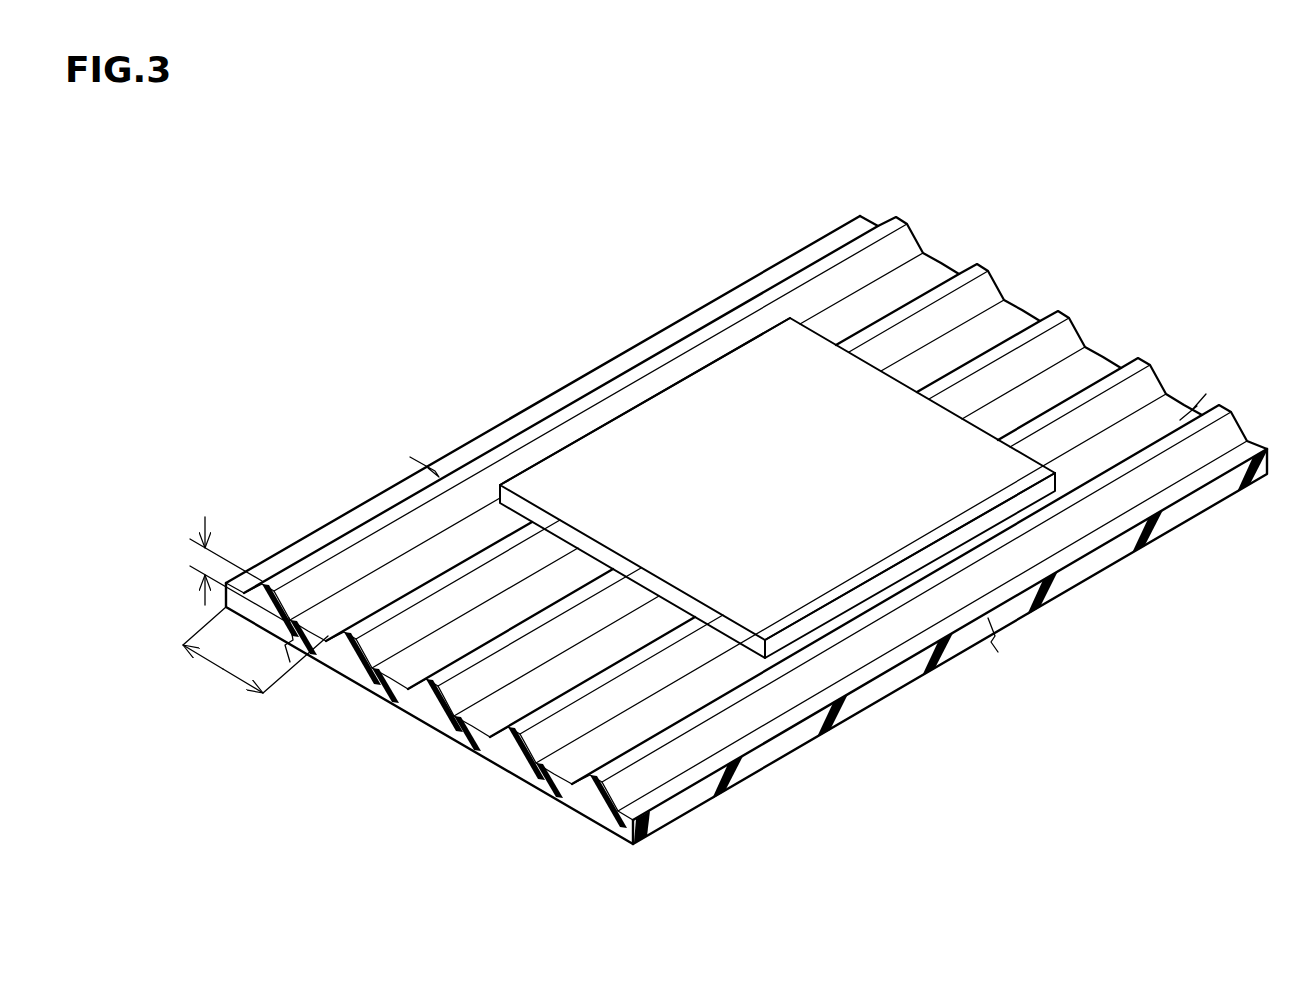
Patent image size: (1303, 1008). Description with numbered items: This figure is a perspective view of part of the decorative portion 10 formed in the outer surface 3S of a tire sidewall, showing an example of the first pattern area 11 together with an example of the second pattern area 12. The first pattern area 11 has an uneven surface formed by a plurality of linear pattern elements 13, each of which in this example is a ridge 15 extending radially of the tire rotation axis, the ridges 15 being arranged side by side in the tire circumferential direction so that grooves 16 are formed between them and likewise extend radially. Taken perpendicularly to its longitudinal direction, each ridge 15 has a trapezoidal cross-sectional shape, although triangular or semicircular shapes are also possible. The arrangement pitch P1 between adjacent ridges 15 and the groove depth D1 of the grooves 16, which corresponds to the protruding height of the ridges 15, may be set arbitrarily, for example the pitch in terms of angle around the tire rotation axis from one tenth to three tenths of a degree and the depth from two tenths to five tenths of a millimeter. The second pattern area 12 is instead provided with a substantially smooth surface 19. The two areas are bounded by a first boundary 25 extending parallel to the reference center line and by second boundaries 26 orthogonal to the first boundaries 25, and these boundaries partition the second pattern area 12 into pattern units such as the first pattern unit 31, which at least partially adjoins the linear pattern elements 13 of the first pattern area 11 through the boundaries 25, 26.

The decorative portion 10 is at (762, 217).
The first pattern area 11 is at (1072, 382).
The second pattern area 12 is at (668, 420).
The linear pattern element 13 is at (303, 727).
The ridge 15 is at (876, 233).
The groove 16 is at (920, 277).
The substantially smooth surface 19 is at (607, 452).
The first boundary 25 is at (556, 452).
The second boundary 26 is at (821, 335).
The first pattern unit 31 is at (812, 563).
The outer surface 3S is at (733, 385).
The groove depth D1 is at (226, 570).
The arrangement pitch P1 is at (255, 658).